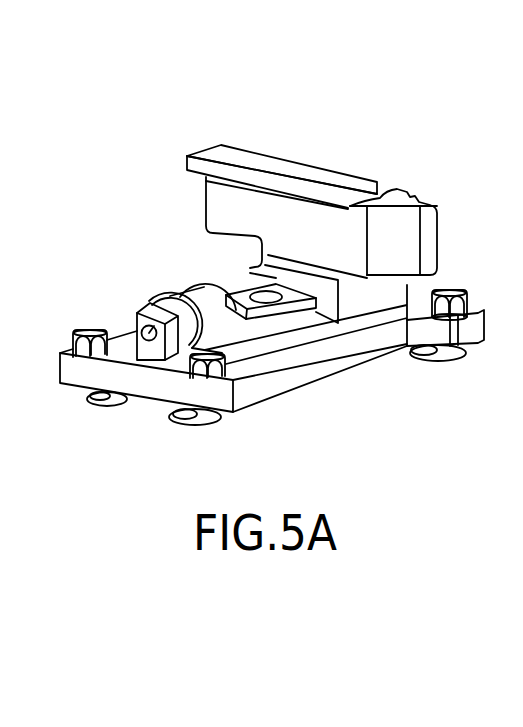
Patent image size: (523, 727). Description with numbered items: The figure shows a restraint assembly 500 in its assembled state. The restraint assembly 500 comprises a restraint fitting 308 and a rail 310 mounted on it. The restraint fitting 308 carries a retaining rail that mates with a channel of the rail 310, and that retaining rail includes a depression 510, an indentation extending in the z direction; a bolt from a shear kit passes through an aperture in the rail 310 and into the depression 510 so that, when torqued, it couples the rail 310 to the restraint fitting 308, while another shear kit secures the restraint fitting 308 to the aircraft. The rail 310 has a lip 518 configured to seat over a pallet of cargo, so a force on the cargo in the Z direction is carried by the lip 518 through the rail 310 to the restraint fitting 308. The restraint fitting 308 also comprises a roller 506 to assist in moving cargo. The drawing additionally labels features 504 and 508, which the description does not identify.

The restraint assembly 500 is at (106, 126).
The lip 518 is at (380, 198).
The rail 310 is at (352, 236).
The slider block 508 is at (278, 320).
The depression 510 is at (249, 297).
The roller 506 is at (192, 303).
The end clamp block 504 is at (407, 289).
The restraint fitting 308 is at (261, 380).